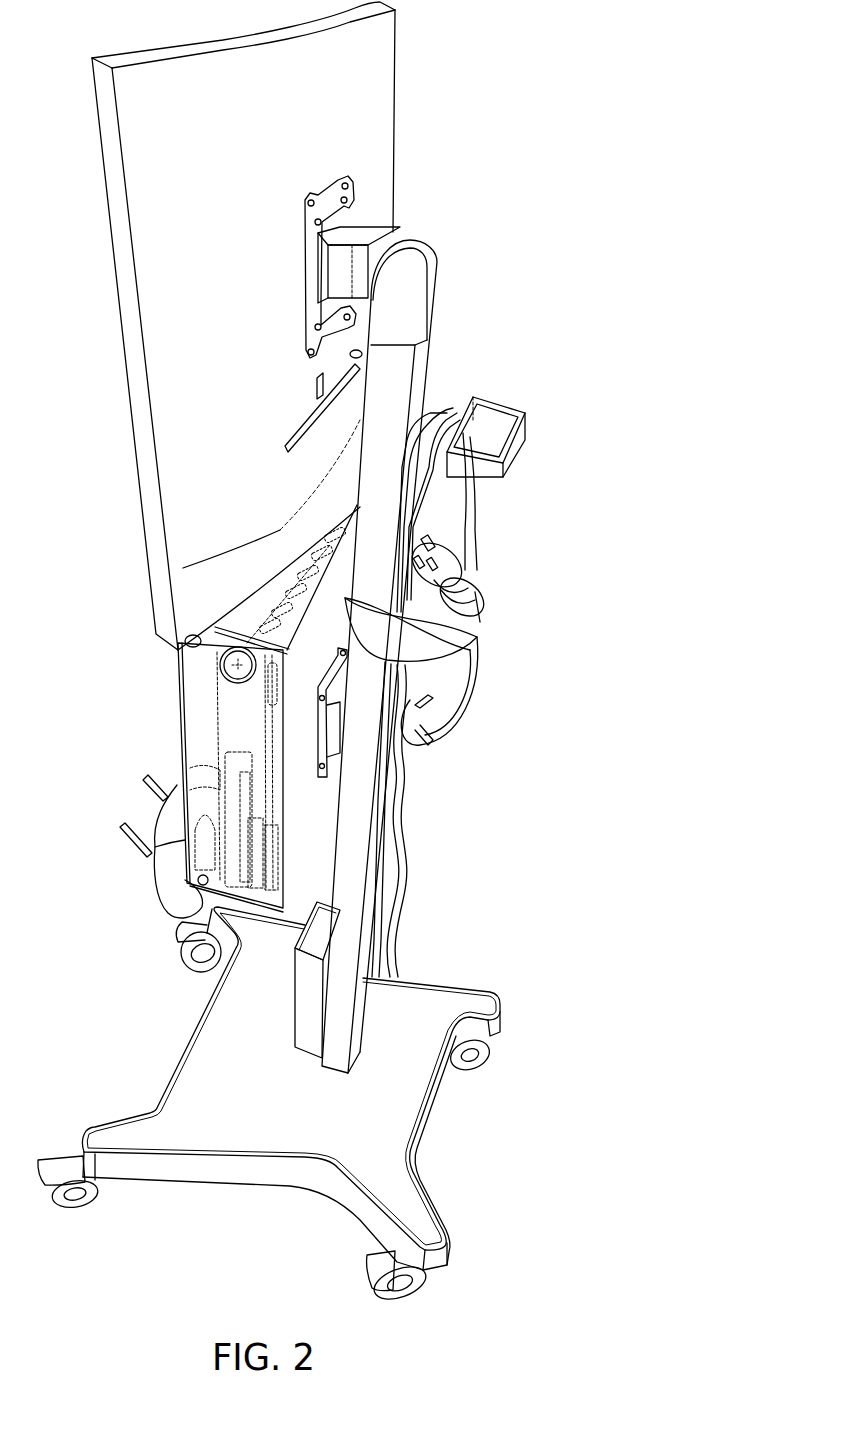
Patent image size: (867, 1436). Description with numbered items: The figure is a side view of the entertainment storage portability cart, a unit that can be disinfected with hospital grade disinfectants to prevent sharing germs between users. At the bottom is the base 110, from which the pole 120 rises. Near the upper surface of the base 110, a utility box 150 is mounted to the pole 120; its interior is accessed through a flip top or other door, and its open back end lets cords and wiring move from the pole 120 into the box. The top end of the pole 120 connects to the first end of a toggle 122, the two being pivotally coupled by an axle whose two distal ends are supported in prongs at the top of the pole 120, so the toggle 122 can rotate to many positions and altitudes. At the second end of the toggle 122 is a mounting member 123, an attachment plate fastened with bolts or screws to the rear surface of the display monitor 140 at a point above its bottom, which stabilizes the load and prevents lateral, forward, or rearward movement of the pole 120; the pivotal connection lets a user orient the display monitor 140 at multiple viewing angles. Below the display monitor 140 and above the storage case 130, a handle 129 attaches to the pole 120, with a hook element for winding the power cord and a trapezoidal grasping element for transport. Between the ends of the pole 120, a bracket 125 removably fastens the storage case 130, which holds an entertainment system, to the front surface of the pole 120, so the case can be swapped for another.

The base 110 is at (373, 1120).
The pole 120 is at (440, 357).
The toggle 122 is at (372, 242).
The mounting member 123 is at (329, 193).
The bracket 125 is at (347, 817).
The handle 129 is at (525, 455).
The storage case 130 is at (275, 746).
The display monitor 140 is at (149, 261).
The utility box 150 is at (296, 991).